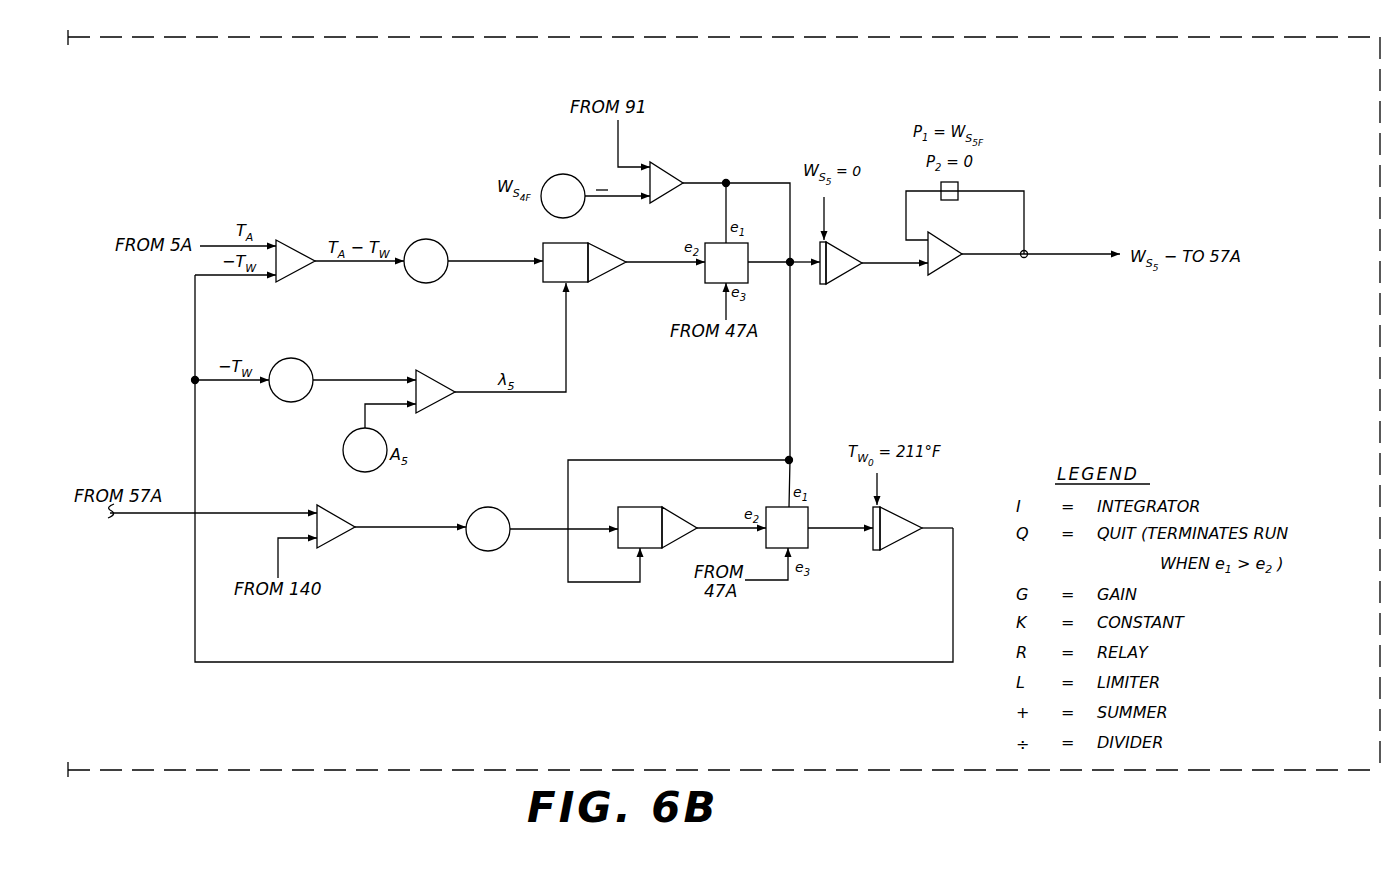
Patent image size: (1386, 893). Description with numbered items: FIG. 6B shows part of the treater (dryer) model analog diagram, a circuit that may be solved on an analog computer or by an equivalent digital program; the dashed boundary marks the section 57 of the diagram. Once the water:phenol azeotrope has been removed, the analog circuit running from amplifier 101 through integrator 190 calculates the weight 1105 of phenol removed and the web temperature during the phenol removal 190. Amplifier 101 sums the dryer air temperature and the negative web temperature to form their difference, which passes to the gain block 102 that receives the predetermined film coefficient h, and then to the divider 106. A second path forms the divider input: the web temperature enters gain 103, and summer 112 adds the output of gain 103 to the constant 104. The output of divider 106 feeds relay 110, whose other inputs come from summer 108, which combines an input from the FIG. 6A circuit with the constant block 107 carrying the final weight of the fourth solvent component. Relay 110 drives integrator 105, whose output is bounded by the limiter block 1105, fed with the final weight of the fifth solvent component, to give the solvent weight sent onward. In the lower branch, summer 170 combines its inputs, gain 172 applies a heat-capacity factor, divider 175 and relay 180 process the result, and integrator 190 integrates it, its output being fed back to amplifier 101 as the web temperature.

The dryer model analog diagram section 57 is at (195, 38).
The amplifier 101 is at (290, 245).
The block 102 is at (431, 240).
The gain 103 is at (300, 360).
The constant 104 is at (343, 450).
The integrator 105 is at (838, 250).
The divider 106 is at (585, 279).
The block 107 is at (558, 174).
The summer 108 is at (668, 170).
The relay 110 is at (718, 243).
The summer 112 is at (433, 376).
The summer 170 is at (335, 506).
The gain 172 is at (498, 508).
The divider 175 is at (638, 507).
The relay 180 is at (780, 505).
The integrator 190 is at (896, 508).
The block 1105 is at (948, 262).